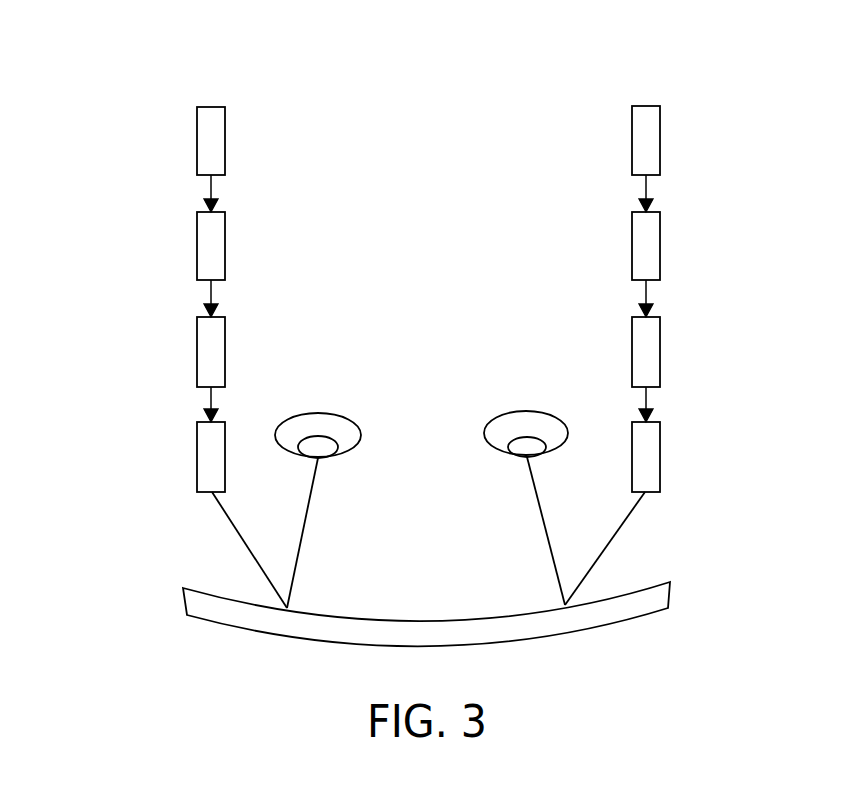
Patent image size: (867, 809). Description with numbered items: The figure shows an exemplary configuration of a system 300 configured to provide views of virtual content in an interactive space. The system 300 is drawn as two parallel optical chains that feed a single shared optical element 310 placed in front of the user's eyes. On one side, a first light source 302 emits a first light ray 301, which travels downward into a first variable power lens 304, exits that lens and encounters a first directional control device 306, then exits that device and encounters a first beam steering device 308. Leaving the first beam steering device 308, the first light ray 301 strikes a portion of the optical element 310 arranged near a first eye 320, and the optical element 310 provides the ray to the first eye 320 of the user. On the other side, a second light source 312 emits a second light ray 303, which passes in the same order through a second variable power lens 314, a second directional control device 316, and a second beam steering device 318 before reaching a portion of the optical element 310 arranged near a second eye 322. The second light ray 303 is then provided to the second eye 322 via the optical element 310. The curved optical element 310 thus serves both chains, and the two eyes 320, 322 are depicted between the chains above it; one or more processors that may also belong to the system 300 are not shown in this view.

The system 300 is at (513, 76).
The first light ray 301 is at (213, 192).
The first light source 302 is at (197, 140).
The second light ray 303 is at (644, 188).
The first variable power lens 304 is at (197, 255).
The first directional control device 306 is at (197, 350).
The first beam steering device 308 is at (197, 480).
The optical element 310 is at (186, 613).
The second light source 312 is at (660, 110).
The second variable power lens 314 is at (660, 242).
The second directional control device 316 is at (660, 350).
The second beam steering device 318 is at (660, 455).
The first eye 320 is at (302, 421).
The second eye 322 is at (503, 428).